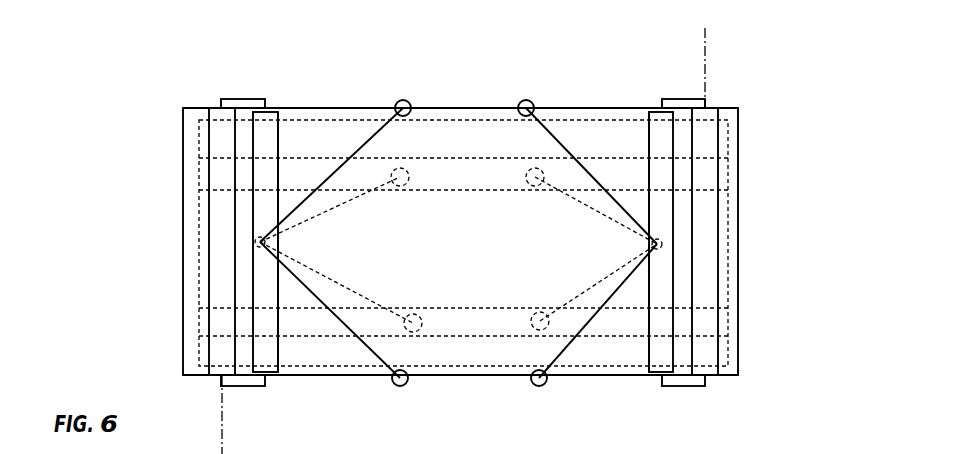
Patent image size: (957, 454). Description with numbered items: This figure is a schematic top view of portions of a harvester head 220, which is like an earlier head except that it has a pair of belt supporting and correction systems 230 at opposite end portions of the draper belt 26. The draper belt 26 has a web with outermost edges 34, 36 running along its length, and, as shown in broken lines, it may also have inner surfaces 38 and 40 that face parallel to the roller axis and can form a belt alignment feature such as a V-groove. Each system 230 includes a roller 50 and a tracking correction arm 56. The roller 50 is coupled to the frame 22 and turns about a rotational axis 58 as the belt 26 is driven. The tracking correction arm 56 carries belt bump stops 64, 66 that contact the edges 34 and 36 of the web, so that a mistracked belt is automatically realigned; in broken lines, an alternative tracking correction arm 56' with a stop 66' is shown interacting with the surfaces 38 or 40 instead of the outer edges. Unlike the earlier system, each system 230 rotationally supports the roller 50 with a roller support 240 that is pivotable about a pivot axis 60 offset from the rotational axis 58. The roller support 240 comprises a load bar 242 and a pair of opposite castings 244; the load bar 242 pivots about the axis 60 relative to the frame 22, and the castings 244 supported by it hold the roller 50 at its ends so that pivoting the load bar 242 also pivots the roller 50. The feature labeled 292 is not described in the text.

The harvester head 220 is at (407, 232).
The frame 22 is at (183, 168).
The draper belt 26 is at (603, 118).
The outermost edge 34 is at (455, 369).
The outermost edge 36 is at (472, 107).
The surface 38 is at (430, 192).
The surface 40 is at (481, 161).
The roller 50 is at (719, 299).
The tracking correction arm 56 is at (458, 243).
The tracking correction arm 56' is at (458, 250).
The rotational axis 58 is at (704, 70).
The pivot axis 60 is at (257, 241).
The belt bump stop 64 is at (533, 105).
The belt bump stop 66 is at (421, 85).
The stop 66' is at (420, 155).
The belt supporting and correction system 230 is at (481, 236).
The roller support 240 is at (275, 103).
The load bar 242 is at (279, 143).
The casting 244 is at (245, 98).
The bracket inner edge 292 is at (647, 288).